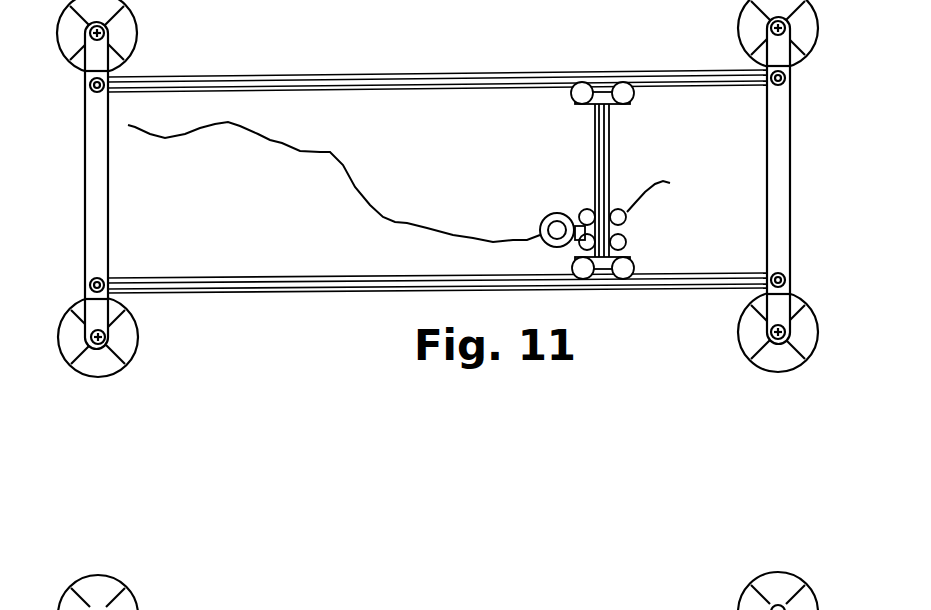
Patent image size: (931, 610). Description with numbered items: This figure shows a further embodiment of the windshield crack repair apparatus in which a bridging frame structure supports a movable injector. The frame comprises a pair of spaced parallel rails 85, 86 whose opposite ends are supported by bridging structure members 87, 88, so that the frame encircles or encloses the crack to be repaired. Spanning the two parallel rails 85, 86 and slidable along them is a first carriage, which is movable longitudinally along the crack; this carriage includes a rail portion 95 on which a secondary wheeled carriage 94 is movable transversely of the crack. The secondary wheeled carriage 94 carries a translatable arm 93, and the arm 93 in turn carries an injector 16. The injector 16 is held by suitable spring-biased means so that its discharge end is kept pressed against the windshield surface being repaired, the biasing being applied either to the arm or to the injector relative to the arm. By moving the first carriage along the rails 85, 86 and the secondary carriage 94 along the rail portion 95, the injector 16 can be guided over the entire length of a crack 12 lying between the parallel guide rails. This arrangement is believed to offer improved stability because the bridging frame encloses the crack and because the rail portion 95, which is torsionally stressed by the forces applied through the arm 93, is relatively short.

The cable 12 is at (365, 197).
The injector 16 is at (547, 224).
The rail 85 is at (307, 80).
The rail 86 is at (332, 288).
The bridging structure member 87 is at (98, 227).
The bridging structure member 88 is at (780, 186).
The translatable arm 93 is at (578, 225).
The secondary wheeled carriage 94 is at (616, 180).
The rail portion 95 is at (607, 167).